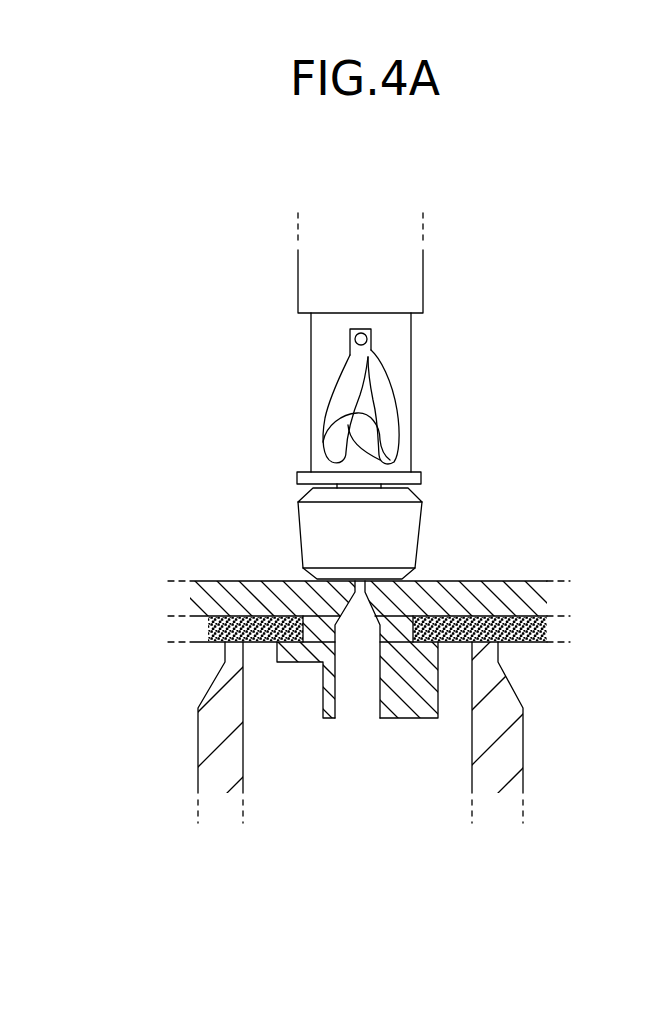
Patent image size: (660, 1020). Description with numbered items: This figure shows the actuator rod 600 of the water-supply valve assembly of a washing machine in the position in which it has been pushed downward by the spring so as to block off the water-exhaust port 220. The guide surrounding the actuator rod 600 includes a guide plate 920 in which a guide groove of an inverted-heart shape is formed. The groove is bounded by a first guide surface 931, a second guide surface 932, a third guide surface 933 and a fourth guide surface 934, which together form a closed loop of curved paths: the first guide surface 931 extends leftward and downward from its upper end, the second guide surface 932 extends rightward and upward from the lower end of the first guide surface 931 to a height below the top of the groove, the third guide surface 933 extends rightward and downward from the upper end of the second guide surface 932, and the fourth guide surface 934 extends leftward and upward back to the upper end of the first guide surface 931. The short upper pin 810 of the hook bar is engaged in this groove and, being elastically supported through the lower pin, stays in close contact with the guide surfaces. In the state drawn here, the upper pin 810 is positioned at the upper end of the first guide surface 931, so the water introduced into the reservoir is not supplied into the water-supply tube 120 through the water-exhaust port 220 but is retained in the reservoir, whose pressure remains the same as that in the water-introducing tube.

The actuator rod 600 is at (408, 283).
The guide plate 920 is at (316, 362).
The upper pin 810 is at (355, 339).
The first guide surface 931 is at (338, 408).
The fourth guide surface 934 is at (388, 395).
The third guide surface 933 is at (372, 435).
The second guide surface 932 is at (307, 456).
The water-supply tube 120 is at (428, 755).
The water-exhaust port 220 is at (353, 705).